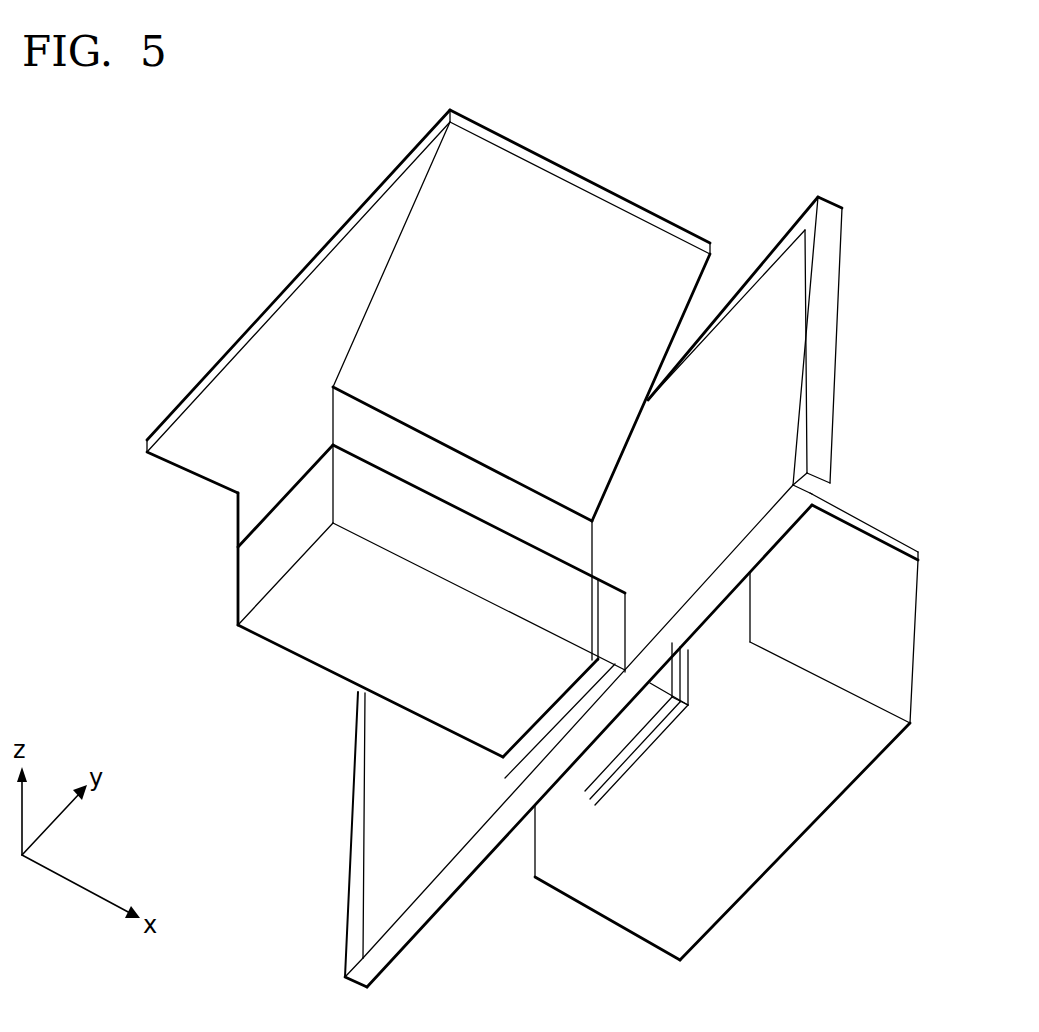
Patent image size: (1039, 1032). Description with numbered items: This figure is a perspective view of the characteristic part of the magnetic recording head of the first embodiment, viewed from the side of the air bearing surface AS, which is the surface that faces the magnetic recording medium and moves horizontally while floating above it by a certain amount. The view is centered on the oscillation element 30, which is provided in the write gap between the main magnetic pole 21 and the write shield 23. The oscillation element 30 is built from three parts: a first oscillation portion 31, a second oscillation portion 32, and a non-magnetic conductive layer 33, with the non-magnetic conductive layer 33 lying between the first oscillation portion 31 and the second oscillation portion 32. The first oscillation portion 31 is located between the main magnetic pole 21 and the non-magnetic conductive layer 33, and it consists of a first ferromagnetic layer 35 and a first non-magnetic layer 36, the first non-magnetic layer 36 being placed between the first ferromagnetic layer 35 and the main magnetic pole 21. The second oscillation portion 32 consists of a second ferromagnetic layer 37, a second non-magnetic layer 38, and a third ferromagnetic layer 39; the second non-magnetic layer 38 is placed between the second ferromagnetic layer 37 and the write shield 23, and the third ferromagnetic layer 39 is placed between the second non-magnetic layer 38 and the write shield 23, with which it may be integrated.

The main magnetic pole 21 is at (209, 593).
The write shield 23 is at (822, 858).
The oscillation element 30 is at (520, 740).
The first oscillation portion 31 is at (527, 736).
The second oscillation portion 32 is at (582, 819).
The non-magnetic conductive layer 33 is at (390, 945).
The first ferromagnetic layer 35 is at (522, 760).
The first non-magnetic layer 36 is at (507, 757).
The second ferromagnetic layer 37 is at (560, 790).
The second non-magnetic layer 38 is at (582, 800).
The third ferromagnetic layer 39 is at (593, 810).
The air bearing surface AS is at (838, 775).